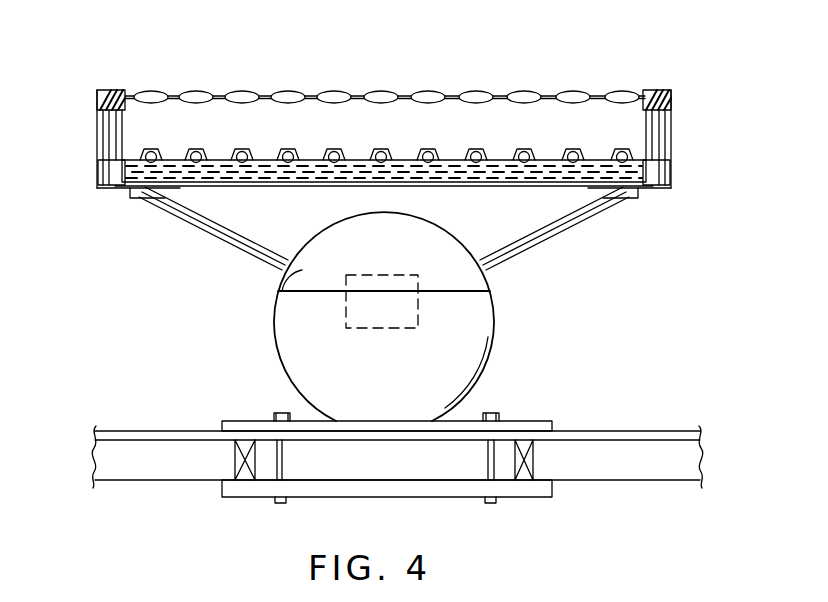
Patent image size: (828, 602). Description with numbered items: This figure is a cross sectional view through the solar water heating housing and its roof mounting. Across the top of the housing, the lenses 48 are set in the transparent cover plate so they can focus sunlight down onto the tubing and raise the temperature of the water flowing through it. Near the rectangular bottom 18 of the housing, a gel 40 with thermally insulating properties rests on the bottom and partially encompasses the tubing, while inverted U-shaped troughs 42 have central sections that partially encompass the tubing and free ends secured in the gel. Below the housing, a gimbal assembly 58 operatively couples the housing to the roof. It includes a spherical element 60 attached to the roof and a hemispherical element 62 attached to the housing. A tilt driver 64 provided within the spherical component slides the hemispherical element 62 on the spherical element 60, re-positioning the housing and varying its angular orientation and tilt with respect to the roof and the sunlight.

The rectangular bottom 18 is at (322, 186).
The lenses 48 is at (437, 91).
The inverted U-shaped troughs 42 is at (620, 150).
The gel 40 is at (466, 185).
The spherical element 60 is at (305, 380).
The gimbal assembly 58 is at (492, 291).
The hemispherical element 62 is at (282, 283).
The tilt driver 64 is at (418, 320).